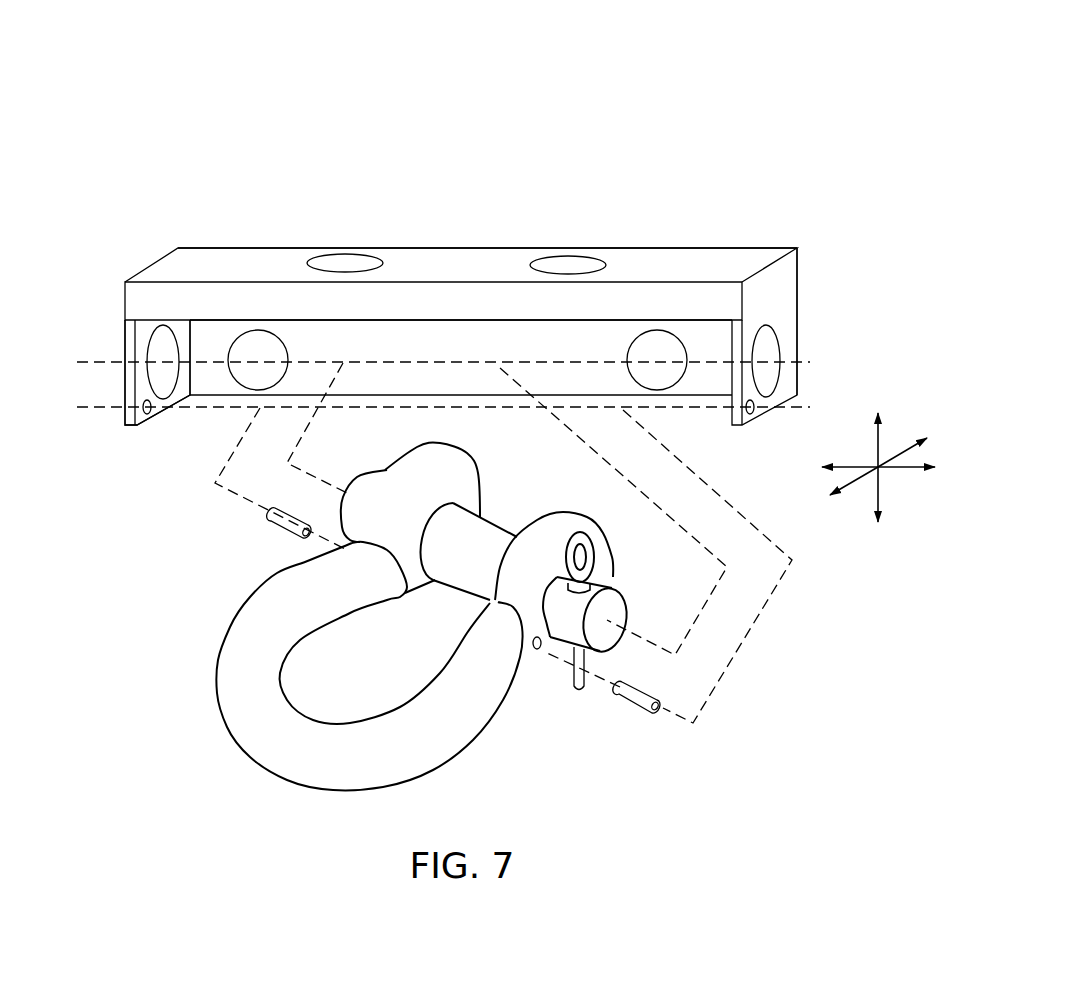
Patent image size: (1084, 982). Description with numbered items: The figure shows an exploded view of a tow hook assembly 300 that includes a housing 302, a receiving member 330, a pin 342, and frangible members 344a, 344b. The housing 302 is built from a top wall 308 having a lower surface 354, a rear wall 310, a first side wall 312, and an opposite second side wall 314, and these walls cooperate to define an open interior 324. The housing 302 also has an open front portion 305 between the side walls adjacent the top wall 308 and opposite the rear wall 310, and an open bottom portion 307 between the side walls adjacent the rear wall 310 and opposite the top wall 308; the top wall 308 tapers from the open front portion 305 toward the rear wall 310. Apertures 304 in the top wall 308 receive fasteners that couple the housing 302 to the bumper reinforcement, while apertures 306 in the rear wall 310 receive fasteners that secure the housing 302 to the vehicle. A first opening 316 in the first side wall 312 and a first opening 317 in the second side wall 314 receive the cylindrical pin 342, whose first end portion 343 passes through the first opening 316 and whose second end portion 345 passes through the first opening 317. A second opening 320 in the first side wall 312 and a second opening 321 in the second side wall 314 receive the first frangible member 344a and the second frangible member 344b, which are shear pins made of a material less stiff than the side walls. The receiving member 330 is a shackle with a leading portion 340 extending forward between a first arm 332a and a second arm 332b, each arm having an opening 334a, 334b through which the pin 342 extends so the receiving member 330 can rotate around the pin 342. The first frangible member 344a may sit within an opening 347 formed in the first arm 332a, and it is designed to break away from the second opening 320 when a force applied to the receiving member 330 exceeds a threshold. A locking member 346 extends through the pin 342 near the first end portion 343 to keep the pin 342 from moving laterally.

The tow hook assembly 300 is at (660, 102).
The housing 302 is at (678, 238).
The apertures 304 is at (353, 262).
The open front portion 305 is at (432, 348).
The apertures 306 is at (283, 352).
The open bottom portion 307 is at (616, 422).
The top wall 308 is at (262, 254).
The rear wall 310 is at (459, 336).
The first side wall 312 is at (795, 283).
The second side wall 314 is at (144, 391).
The first opening 316 is at (767, 353).
The first opening 317 is at (152, 352).
The second opening 320 is at (751, 414).
The second opening 321 is at (148, 413).
The open interior 324 is at (488, 373).
The receiving member 330 is at (219, 656).
The first arm 332a is at (580, 519).
The second arm 332b is at (481, 479).
The opening 334a is at (554, 609).
The opening 334b is at (430, 552).
The leading portion 340 is at (245, 745).
The pin 342 is at (481, 550).
The first end portion 343 is at (621, 599).
The first frangible member 344a is at (639, 704).
The second frangible member 344b is at (272, 517).
The second end portion 345 is at (378, 472).
The locking member 346 is at (594, 558).
The opening 347 is at (538, 651).
The lower surface 354 is at (202, 323).